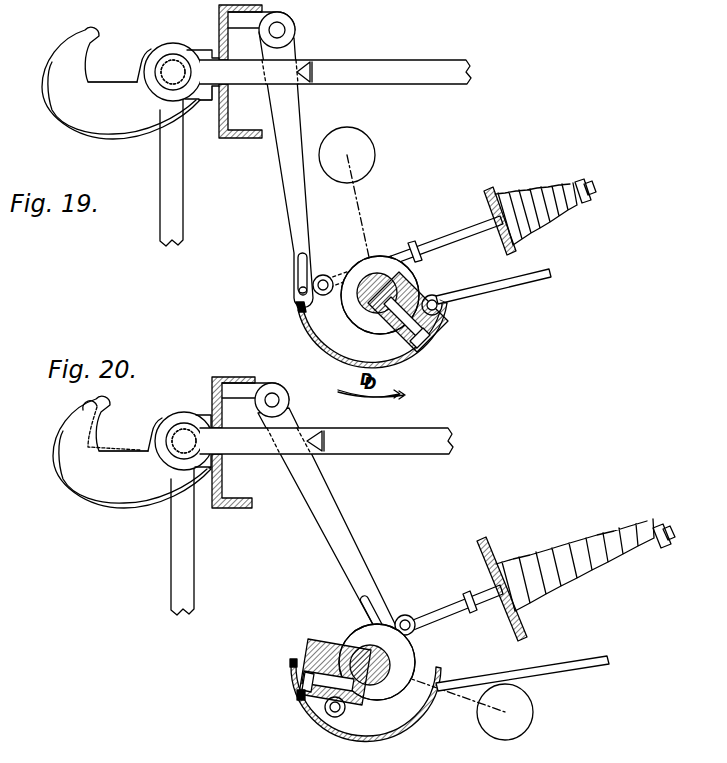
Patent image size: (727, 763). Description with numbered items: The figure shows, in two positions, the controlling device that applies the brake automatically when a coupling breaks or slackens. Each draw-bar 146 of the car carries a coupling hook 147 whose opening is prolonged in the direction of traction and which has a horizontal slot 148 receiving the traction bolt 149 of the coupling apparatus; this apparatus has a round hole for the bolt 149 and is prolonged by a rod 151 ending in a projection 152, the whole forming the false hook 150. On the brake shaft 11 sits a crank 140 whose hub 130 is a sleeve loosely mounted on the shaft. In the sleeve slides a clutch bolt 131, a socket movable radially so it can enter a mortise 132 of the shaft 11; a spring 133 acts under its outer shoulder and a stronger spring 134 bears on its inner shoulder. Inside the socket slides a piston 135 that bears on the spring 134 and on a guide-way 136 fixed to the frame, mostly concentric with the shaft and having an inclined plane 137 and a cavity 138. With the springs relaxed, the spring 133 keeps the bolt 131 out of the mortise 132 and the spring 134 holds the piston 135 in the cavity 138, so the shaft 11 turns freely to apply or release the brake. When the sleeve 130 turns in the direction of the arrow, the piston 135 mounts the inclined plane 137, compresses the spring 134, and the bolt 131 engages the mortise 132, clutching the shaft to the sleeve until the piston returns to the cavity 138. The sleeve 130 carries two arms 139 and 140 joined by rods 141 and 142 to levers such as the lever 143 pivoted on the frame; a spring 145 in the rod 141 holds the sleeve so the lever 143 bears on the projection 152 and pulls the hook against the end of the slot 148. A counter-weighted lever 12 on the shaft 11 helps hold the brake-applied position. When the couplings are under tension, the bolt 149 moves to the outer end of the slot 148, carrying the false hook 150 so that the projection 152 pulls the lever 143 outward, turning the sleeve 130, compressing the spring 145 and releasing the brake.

In FIG. 19, the shaft 11 is at (412, 282).
In FIG. 20, the shaft 11 is at (378, 692).
In FIG. 19, the lever 12 is at (356, 188).
In FIG. 20, the lever 12 is at (470, 704).
In FIG. 19, the hub 130 is at (342, 325).
In FIG. 20, the hub 130 is at (362, 630).
In FIG. 19, the clutch bolt 131 is at (345, 357).
In FIG. 19, the mortise 132 is at (362, 306).
In FIG. 20, the mortise 132 is at (396, 667).
In FIG. 19, the spring 133 is at (400, 336).
In FIG. 20, the spring 133 is at (318, 660).
In FIG. 19, the spring 134 is at (436, 341).
In FIG. 20, the spring 134 is at (300, 675).
In FIG. 19, the piston 135 is at (428, 352).
In FIG. 20, the piston 135 is at (302, 686).
In FIG. 19, the guide-way 136 is at (448, 318).
In FIG. 20, the guide-way 136 is at (428, 718).
In FIG. 19, the inclined plane 137 is at (301, 311).
In FIG. 20, the inclined plane 137 is at (298, 700).
In FIG. 19, the cavity 138 is at (299, 298).
In FIG. 20, the cavity 138 is at (289, 663).
In FIG. 19, the arm 139 is at (326, 280).
In FIG. 20, the arm 139 is at (406, 620).
In FIG. 19, the crank 140 is at (434, 300).
In FIG. 20, the crank 140 is at (330, 713).
In FIG. 19, the rod 141 is at (410, 256).
In FIG. 20, the rod 141 is at (470, 600).
In FIG. 19, the rod 142 is at (490, 290).
In FIG. 20, the rod 142 is at (563, 673).
In FIG. 19, the lever 143 is at (284, 188).
In FIG. 20, the lever 143 is at (326, 510).
In FIG. 19, the spring 145 is at (545, 191).
In FIG. 20, the spring 145 is at (560, 554).
In FIG. 19, the draw-bar 146 is at (421, 78).
In FIG. 20, the draw-bar 146 is at (391, 455).
In FIG. 19, the coupling hook 147 is at (117, 141).
In FIG. 20, the coupling hook 147 is at (94, 504).
In FIG. 19, the slot 148 is at (206, 96).
In FIG. 20, the slot 148 is at (150, 447).
In FIG. 19, the traction bolt 149 is at (173, 62).
In FIG. 20, the traction bolt 149 is at (185, 430).
In FIG. 19, the false hook 150 is at (112, 99).
In FIG. 20, the false hook 150 is at (123, 468).
In FIG. 19, the rod 151 is at (252, 75).
In FIG. 20, the rod 151 is at (252, 450).
In FIG. 19, the projection 152 is at (314, 72).
In FIG. 20, the projection 152 is at (326, 441).